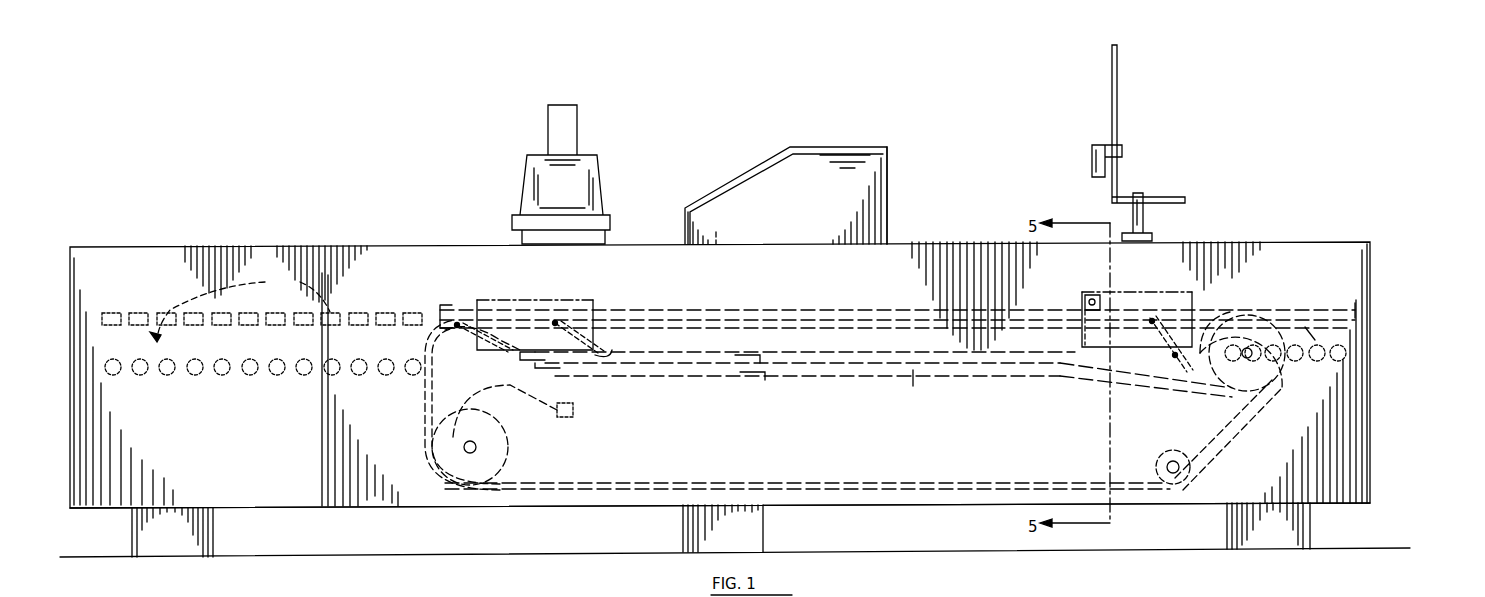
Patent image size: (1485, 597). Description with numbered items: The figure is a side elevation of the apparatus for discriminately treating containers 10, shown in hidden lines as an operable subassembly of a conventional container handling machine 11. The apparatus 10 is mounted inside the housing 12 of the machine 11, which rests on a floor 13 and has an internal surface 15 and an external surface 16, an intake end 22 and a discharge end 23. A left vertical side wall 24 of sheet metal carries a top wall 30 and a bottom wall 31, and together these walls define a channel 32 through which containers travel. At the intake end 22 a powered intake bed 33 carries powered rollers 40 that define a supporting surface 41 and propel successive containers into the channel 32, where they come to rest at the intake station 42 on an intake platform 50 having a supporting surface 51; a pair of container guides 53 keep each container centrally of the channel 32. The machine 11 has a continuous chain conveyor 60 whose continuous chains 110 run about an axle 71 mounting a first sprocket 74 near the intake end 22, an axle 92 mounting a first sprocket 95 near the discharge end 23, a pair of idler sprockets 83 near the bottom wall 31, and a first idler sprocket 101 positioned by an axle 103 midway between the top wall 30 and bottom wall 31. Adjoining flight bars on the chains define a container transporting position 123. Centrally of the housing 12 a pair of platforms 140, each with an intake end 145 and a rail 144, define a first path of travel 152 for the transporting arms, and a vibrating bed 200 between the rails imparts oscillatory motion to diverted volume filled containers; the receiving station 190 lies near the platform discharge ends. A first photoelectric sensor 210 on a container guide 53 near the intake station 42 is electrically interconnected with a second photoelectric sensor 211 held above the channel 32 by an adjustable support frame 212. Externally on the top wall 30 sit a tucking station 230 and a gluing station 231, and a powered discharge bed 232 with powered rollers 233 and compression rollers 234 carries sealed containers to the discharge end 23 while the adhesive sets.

The apparatus for discriminately treating containers 10 is at (1080, 378).
The container handling machine 11 is at (898, 214).
The housing 12 is at (925, 241).
The floor 13 is at (940, 551).
The internal surface 15 is at (1300, 483).
The external surface 16 is at (966, 241).
The intake end 22 is at (1372, 292).
The discharge end 23 is at (68, 312).
The left vertical side wall 24 is at (370, 270).
The top wall 30 is at (258, 247).
The bottom wall 31 is at (560, 512).
The channel 32 is at (718, 240).
The powered intake bed 33 is at (1348, 322).
The powered rollers 40 is at (1345, 358).
The supporting surface 41 is at (1301, 325).
The intake station 42 is at (1207, 325).
The intake platform 50 is at (1185, 352).
The supporting surface 51 is at (1118, 348).
The container guides 53 is at (787, 312).
The continuous chain conveyor 60 is at (1228, 455).
The axle 71 is at (1245, 360).
The first sprocket 74 is at (1285, 380).
The idler sprockets 83 is at (1164, 458).
The axle 92 is at (477, 447).
The first sprocket 95 is at (432, 450).
The first idler sprocket 101 is at (440, 400).
The axle 103 is at (440, 333).
The continuous chains 110 is at (770, 484).
The container transporting position 123 is at (600, 311).
The platforms or tracks 140 is at (855, 380).
The rail 144 is at (680, 380).
The intake end 145 is at (1172, 400).
The first path of travel 152 is at (913, 380).
The receiving station 190 is at (420, 385).
The vibrating bed 200 is at (795, 355).
The first photoelectric sensor 210 is at (1085, 297).
The second photoelectric sensor 211 is at (1099, 152).
The adjustable support frame 212 is at (1120, 180).
The tucking station 230 is at (838, 182).
The gluing station 231 is at (583, 178).
The powered discharge bed 232 is at (150, 313).
The powered rollers 233 is at (300, 370).
The compression rollers 234 is at (240, 306).